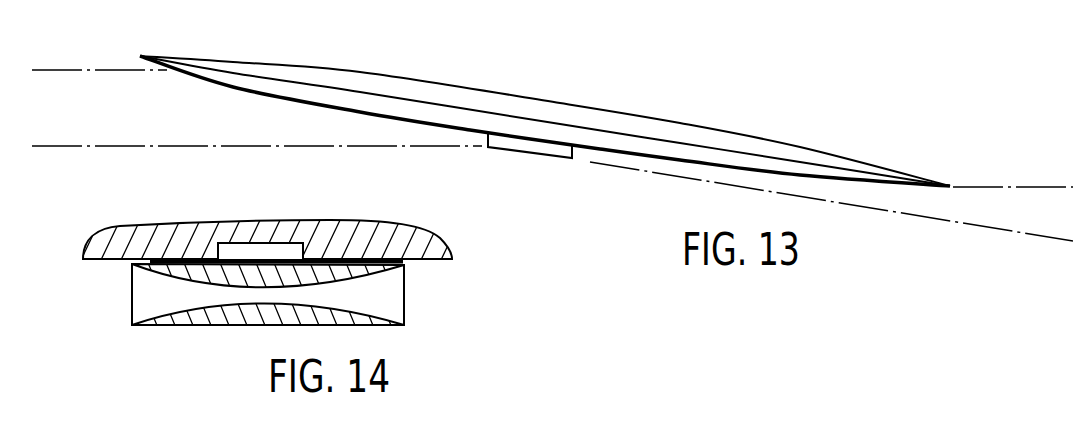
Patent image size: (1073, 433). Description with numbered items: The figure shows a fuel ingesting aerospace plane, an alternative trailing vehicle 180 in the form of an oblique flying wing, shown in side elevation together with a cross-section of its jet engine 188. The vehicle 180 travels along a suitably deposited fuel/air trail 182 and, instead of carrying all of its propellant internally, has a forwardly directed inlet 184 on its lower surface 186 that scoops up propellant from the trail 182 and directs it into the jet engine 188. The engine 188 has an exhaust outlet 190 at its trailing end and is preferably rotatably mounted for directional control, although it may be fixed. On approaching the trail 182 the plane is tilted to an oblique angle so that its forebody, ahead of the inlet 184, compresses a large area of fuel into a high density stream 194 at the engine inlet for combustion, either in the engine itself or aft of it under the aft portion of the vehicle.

In FIG. 13, the trailing vehicle 180 is at (588, 96).
In FIG. 13, the fuel/air trail 182 is at (112, 117).
In FIG. 13, the inlet 184 is at (486, 139).
In FIG. 14, the inlet 184 is at (132, 302).
In FIG. 13, the lower surface 186 is at (693, 162).
In FIG. 14, the lower surface 186 is at (430, 262).
In FIG. 13, the jet engine 188 is at (520, 156).
In FIG. 14, the jet engine 188 is at (253, 320).
In FIG. 13, the exhaust outlet 190 is at (576, 148).
In FIG. 14, the exhaust outlet 190 is at (405, 298).
In FIG. 13, the high density stream 194 is at (455, 138).